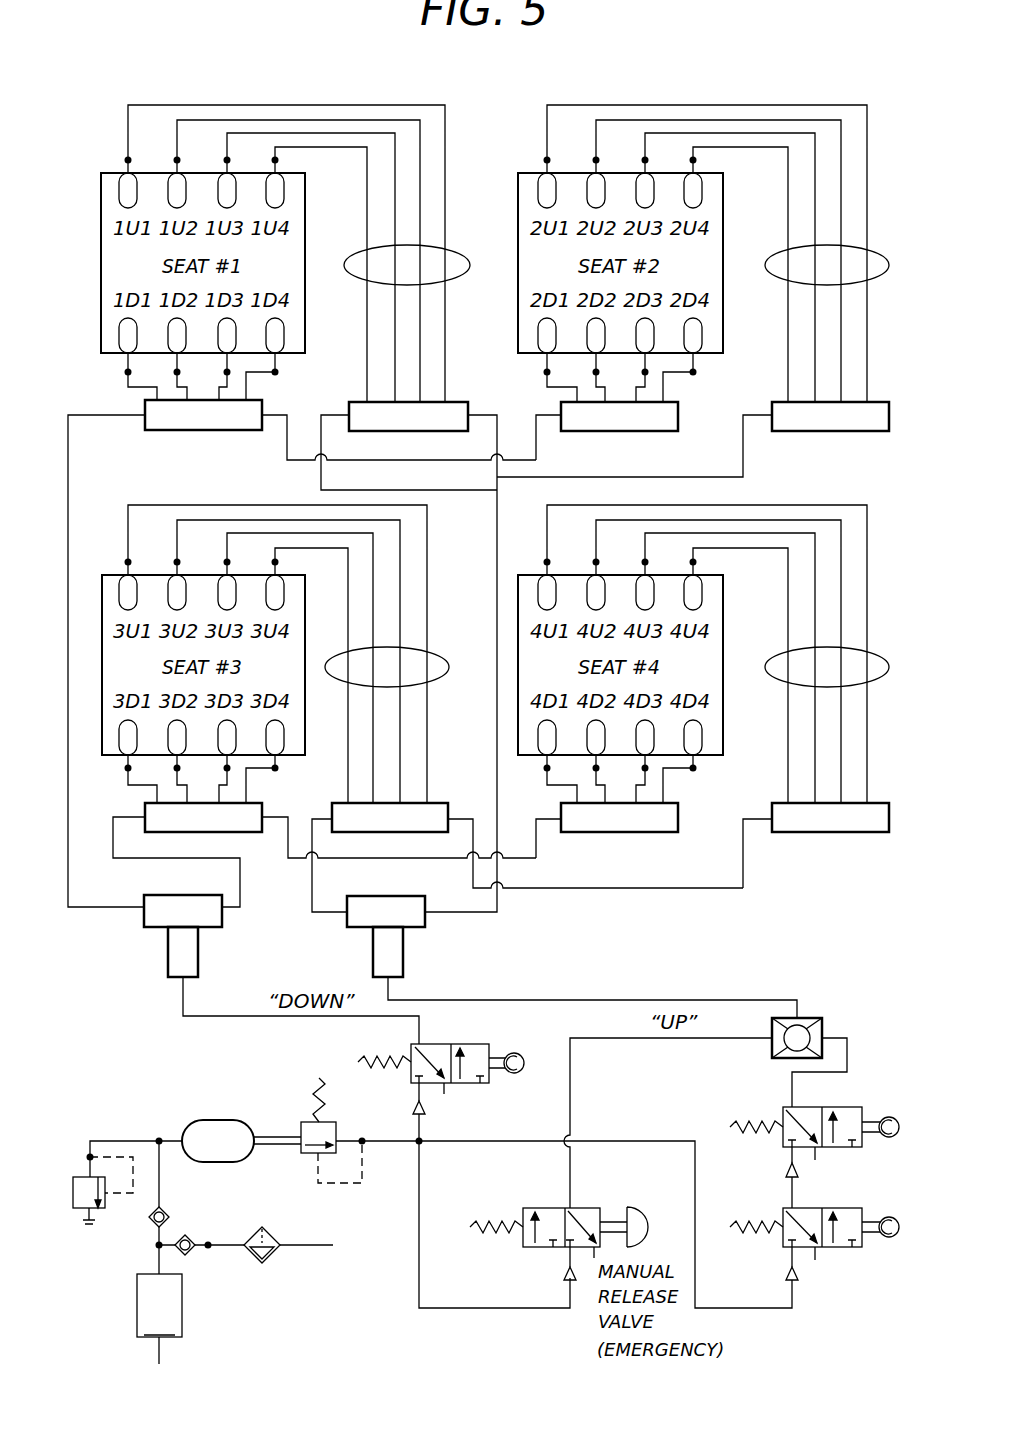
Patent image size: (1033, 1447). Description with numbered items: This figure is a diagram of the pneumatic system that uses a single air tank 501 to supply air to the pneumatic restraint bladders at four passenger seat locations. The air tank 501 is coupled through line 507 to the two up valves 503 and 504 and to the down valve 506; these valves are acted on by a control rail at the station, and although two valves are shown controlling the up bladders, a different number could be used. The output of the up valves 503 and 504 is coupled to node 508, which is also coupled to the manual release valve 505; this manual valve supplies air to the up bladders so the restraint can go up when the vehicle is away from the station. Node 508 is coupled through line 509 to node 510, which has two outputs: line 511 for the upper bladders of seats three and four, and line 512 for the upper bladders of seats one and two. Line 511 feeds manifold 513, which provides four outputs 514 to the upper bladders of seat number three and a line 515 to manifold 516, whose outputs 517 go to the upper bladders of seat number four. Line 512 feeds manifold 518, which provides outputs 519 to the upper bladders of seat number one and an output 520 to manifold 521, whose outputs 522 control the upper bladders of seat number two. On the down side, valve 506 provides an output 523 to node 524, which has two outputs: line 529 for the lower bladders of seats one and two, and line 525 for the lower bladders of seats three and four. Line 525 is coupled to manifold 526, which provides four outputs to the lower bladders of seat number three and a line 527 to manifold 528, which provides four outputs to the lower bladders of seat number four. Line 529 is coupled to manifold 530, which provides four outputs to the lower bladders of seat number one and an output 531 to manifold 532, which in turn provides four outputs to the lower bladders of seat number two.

The air tank 501 is at (218, 1120).
The up valve 503 is at (845, 1248).
The up valve 504 is at (845, 1147).
The manual release valve 505 is at (585, 1208).
The down valve 506 is at (473, 1083).
The line 507 is at (421, 1207).
The node 508 is at (805, 1018).
The line 509 is at (595, 1000).
The node 510 is at (427, 922).
The line 511 is at (313, 887).
The line 512 is at (498, 905).
The manifold 513 is at (437, 803).
The outputs 514 is at (437, 652).
The line 515 is at (698, 889).
The manifold 516 is at (837, 835).
The outputs 517 is at (877, 653).
The manifold 518 is at (455, 402).
The outputs 519 is at (453, 252).
The output 520 is at (743, 455).
The manifold 521 is at (853, 431).
The outputs 522 is at (877, 253).
The output 523 is at (256, 1019).
The node 524 is at (198, 950).
The line 525 is at (240, 898).
The manifold 526 is at (253, 833).
The line 527 is at (537, 848).
The manifold 528 is at (665, 833).
The line 529 is at (68, 460).
The manifold 530 is at (203, 431).
The output 531 is at (537, 444).
The manifold 532 is at (678, 417).